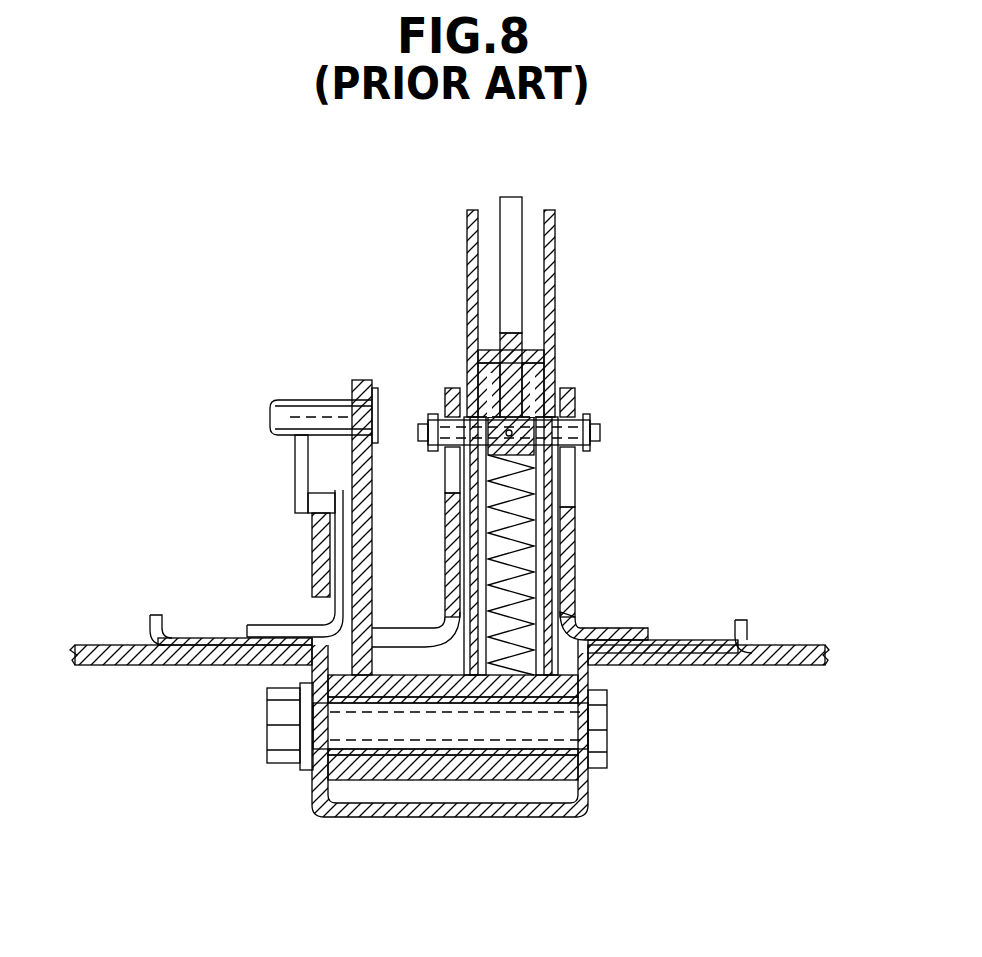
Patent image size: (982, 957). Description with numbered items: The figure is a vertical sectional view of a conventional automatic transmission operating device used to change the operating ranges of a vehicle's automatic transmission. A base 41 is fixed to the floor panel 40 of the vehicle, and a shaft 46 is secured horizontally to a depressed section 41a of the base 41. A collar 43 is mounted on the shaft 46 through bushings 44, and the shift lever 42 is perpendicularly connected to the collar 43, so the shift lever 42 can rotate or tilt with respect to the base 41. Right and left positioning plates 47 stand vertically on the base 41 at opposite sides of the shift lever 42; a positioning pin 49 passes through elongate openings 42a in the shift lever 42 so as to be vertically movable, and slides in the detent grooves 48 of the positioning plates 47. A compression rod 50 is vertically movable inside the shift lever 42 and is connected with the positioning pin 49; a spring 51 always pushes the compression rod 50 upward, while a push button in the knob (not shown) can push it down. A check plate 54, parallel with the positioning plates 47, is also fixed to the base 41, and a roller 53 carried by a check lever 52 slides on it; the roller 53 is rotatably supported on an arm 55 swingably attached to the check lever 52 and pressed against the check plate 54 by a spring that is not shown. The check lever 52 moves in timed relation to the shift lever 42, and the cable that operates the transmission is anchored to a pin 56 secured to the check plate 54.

The floor panel 40 is at (167, 667).
The base 41 is at (270, 625).
The depressed section 41a is at (380, 817).
The shift lever 42 is at (556, 247).
The elongate openings 42a is at (468, 390).
The collar 43 is at (398, 675).
The bushings 44 is at (355, 755).
The shaft 46 is at (570, 727).
The positioning plates 47 is at (455, 532).
The detent grooves 48 is at (457, 468).
The positioning pin 49 is at (527, 442).
The compression rod 50 is at (505, 250).
The spring 51 is at (550, 600).
The check lever 52 is at (360, 385).
The roller 53 is at (322, 500).
The check plate 54 is at (318, 555).
The arm 55 is at (305, 455).
The pin 56 is at (290, 400).